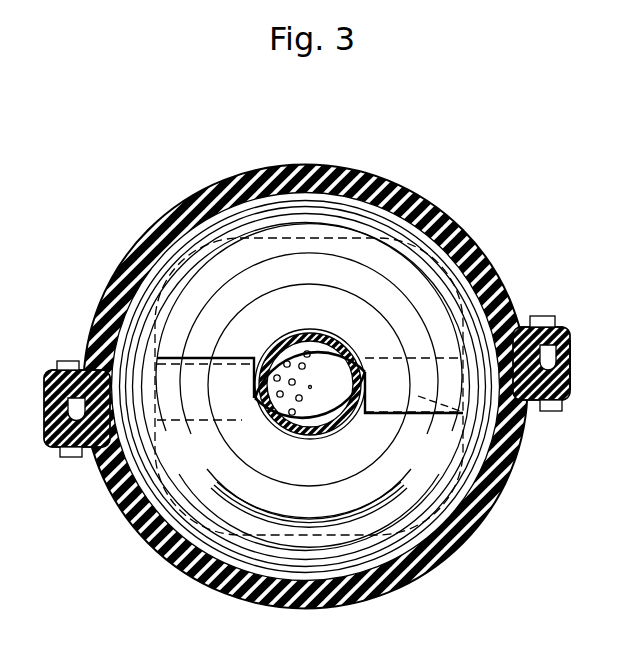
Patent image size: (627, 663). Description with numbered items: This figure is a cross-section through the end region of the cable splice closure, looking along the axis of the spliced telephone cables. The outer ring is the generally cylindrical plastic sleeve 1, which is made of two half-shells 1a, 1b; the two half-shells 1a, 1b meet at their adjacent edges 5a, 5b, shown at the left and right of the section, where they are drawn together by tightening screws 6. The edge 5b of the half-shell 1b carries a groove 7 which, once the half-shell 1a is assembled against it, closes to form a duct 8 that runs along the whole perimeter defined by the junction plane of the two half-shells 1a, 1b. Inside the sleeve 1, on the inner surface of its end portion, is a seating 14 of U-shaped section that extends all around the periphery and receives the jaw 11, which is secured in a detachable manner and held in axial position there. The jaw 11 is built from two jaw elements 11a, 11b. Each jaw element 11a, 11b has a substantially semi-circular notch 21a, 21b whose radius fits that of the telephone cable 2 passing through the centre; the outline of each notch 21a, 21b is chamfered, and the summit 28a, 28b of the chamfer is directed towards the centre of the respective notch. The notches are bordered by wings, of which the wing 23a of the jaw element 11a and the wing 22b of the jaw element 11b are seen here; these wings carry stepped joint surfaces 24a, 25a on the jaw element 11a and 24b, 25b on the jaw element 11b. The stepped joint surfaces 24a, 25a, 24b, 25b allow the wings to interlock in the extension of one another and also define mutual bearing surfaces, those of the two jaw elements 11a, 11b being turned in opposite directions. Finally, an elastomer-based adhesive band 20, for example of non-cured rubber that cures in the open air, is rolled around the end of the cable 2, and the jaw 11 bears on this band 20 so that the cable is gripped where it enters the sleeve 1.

The sleeve 1 is at (240, 170).
The half-shell 1a is at (317, 387).
The half-shell 1b is at (430, 212).
The telephone cable 2 is at (331, 372).
The adjacent edge 5a is at (565, 397).
The adjacent edge 5b is at (569, 364).
The tightening screw 6 is at (541, 314).
The groove 7 is at (576, 330).
The duct 8 is at (548, 330).
The jaw 11 is at (313, 307).
The jaw element 11a is at (281, 310).
The jaw element 11b is at (357, 457).
The seating 14 is at (262, 470).
The adhesive band 20 is at (326, 452).
The notch 21a is at (333, 318).
The notch 21b is at (303, 449).
The wing 22b is at (224, 387).
The wing 23a is at (395, 388).
The stepped joint surface 24a is at (243, 357).
The stepped joint surface 24b is at (247, 420).
The stepped joint surface 25a is at (462, 352).
The stepped joint surface 25b is at (463, 437).
The summit 28a is at (341, 355).
The summit 28b is at (258, 424).